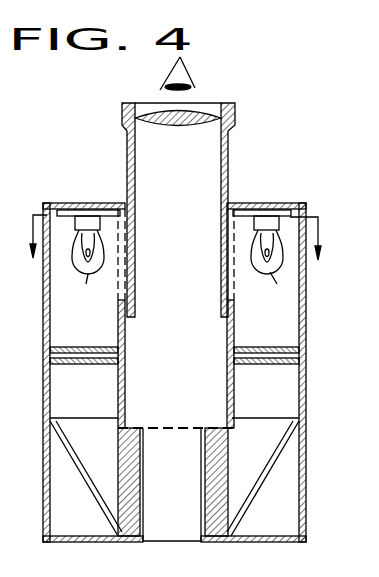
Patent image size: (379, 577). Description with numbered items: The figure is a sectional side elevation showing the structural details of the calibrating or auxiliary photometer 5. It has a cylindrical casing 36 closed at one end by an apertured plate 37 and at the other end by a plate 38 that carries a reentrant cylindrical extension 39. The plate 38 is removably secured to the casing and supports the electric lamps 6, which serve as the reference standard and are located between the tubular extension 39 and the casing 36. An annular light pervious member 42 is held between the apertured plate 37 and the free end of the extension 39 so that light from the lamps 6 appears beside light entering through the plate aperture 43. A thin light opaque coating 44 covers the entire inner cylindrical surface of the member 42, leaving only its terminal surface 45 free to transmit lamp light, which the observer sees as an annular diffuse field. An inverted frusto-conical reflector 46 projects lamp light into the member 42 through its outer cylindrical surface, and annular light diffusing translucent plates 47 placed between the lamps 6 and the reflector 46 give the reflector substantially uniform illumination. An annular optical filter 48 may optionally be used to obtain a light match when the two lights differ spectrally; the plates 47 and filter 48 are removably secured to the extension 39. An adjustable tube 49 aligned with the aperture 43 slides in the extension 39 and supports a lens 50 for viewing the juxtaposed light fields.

The calibrating photometer 5 is at (44, 308).
The electric lamps 6 is at (178, 257).
The cylindrical casing 36 is at (306, 414).
The apertured plate 37 is at (292, 543).
The plate 38 is at (262, 203).
The reentrant cylindrical extension 39 is at (230, 282).
The annular light pervious member 42 is at (223, 462).
The plate aperture 43 is at (160, 540).
The light opaque coating 44 is at (144, 460).
The terminal surface 45 is at (139, 428).
The inverted frusto-conical reflector 46 is at (272, 475).
The annular light diffusing translucent plates 47 is at (258, 347).
The annular optical filter 48 is at (77, 347).
The adjustable tube 49 is at (229, 151).
The lens 50 is at (163, 116).